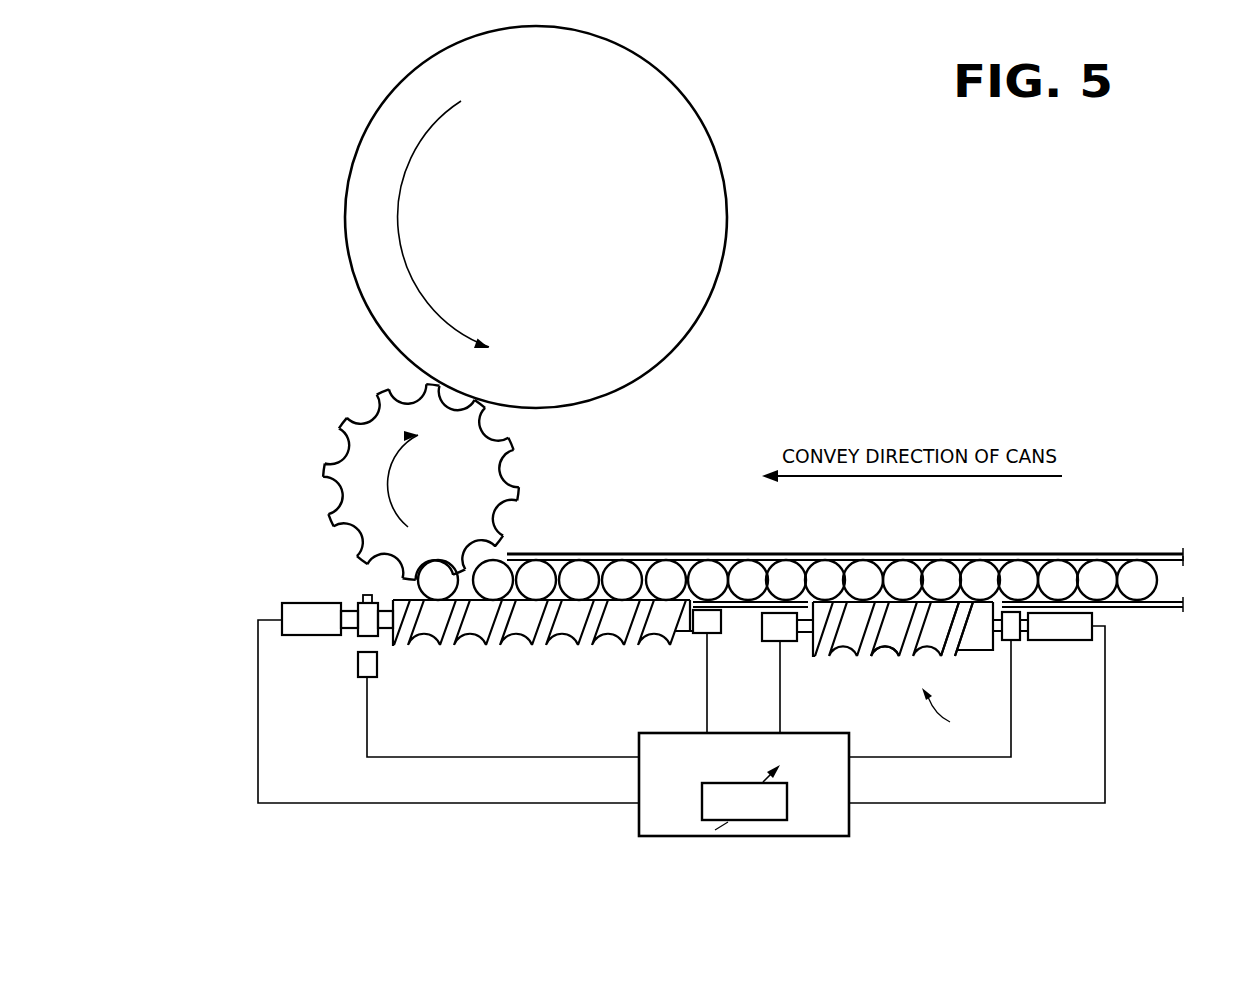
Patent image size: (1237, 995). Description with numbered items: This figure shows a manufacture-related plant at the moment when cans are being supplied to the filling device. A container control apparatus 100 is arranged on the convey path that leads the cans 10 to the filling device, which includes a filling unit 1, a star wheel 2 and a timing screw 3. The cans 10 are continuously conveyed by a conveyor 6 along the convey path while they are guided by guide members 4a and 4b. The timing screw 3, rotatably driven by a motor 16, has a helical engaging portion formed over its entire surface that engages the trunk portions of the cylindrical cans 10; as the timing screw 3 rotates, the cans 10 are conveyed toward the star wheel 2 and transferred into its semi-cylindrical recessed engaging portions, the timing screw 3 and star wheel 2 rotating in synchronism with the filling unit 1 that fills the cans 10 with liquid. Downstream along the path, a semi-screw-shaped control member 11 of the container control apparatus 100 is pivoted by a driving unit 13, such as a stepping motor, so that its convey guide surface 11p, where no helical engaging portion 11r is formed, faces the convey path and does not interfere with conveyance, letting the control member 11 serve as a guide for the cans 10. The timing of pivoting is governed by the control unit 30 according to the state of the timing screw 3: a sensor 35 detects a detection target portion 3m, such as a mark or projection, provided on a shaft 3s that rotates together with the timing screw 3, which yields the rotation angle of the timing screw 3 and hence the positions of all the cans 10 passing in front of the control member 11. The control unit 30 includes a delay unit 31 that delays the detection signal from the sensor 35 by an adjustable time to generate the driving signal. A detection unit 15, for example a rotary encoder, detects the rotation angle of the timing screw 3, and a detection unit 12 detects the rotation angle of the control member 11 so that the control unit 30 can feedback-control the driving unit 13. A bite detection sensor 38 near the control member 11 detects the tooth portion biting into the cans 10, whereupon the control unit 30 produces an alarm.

The filling unit 1 is at (728, 218).
The star wheel 2 is at (463, 475).
The timing screw 3 is at (565, 628).
The detection target portion 3m is at (364, 595).
The shaft 3s is at (352, 624).
The guide member 4a is at (878, 553).
The guide member 4b is at (742, 608).
The conveyor 6 is at (773, 557).
The can 10 is at (665, 558).
The control member 11 is at (878, 648).
The convey guide surface 11p is at (938, 610).
The helical engaging portion 11r is at (843, 652).
The detection unit 12 is at (790, 641).
The driving unit 13 is at (1065, 640).
The detection unit 15 is at (702, 635).
The motor 16 is at (292, 637).
The control unit 30 is at (772, 784).
The delay unit 31 is at (787, 800).
The sensor 35 is at (377, 668).
The bite detection sensor 38 is at (1017, 640).
The container control apparatus 100 is at (951, 717).